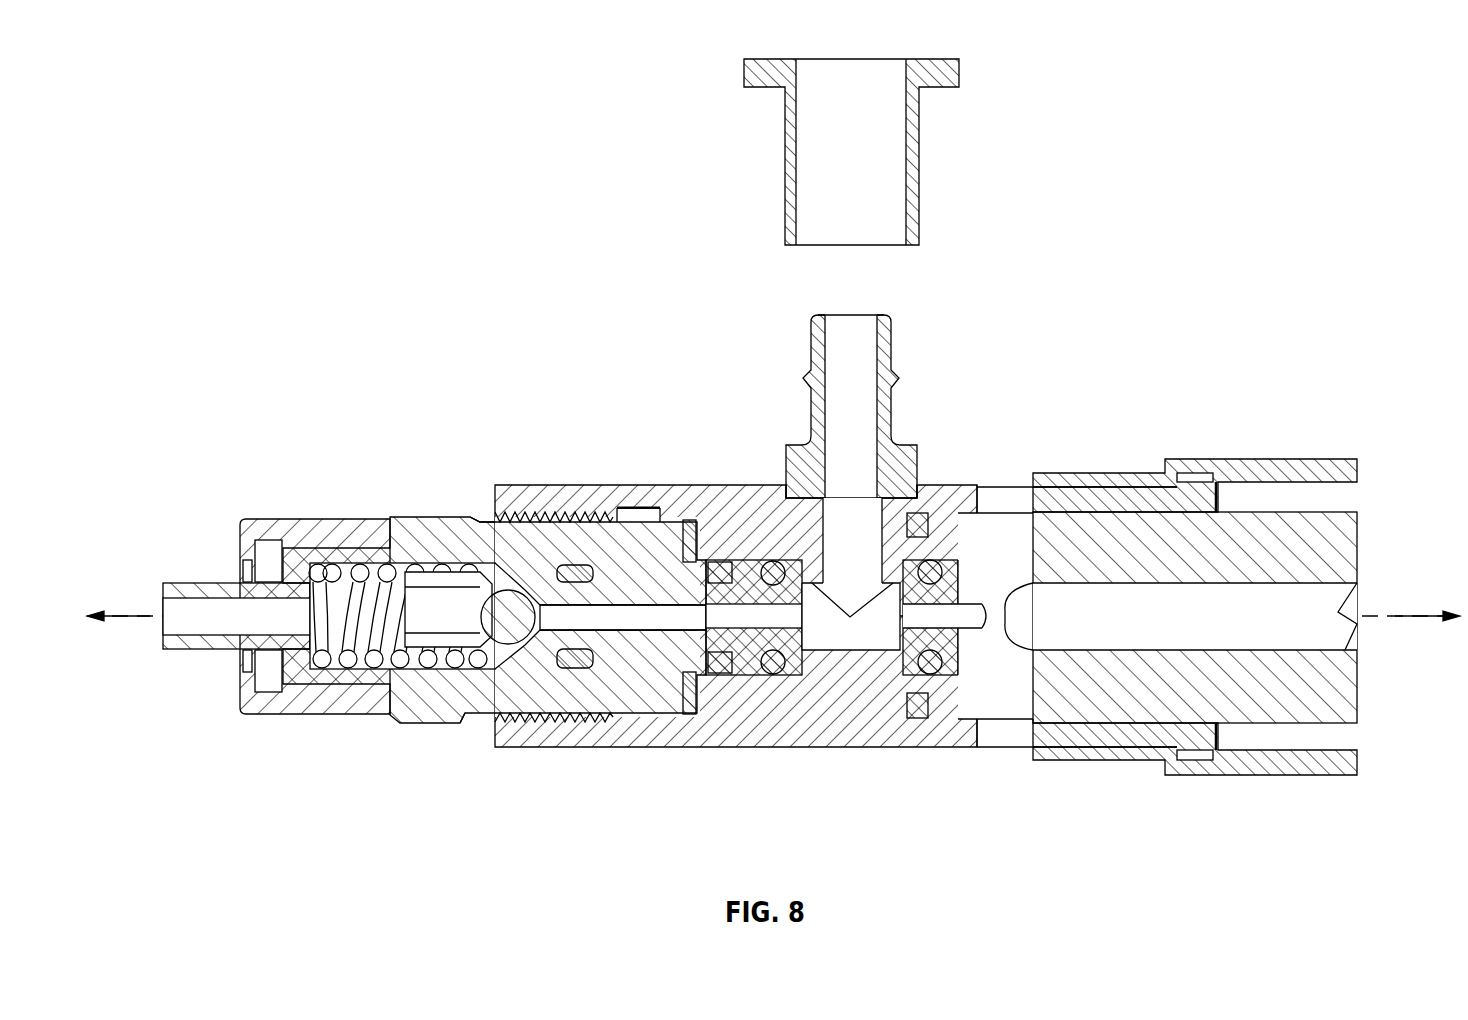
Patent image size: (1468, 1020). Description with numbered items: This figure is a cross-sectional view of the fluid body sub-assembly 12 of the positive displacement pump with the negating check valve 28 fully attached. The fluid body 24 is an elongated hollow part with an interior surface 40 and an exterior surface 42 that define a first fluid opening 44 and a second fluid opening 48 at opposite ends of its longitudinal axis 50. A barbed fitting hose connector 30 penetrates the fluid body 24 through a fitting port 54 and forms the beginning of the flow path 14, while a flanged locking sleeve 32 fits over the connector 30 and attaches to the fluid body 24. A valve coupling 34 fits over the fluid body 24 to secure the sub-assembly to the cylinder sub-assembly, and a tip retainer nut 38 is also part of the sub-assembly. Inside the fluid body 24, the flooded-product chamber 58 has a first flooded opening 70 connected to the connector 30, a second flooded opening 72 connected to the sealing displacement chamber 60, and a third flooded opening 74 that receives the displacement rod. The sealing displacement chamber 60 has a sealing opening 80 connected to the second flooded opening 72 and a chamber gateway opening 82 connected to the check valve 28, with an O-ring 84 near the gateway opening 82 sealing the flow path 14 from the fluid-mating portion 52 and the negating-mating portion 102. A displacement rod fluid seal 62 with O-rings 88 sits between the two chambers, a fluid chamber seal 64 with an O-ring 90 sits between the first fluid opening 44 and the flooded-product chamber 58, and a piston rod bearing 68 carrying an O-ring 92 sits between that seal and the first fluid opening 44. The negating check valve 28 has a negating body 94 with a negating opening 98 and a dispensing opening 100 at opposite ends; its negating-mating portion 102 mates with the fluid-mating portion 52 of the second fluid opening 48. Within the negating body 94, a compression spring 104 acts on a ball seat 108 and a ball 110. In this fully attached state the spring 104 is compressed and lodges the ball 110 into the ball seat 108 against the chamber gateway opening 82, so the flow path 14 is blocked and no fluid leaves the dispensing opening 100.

The fluid body sub-assembly 12 is at (618, 110).
The flow path 14 is at (852, 330).
The fluid body 24 is at (743, 338).
The negating check valve 28 is at (232, 440).
The barbed fitting hose connector 30 is at (893, 348).
The flanged locking sleeve 32 is at (930, 59).
The valve coupling 34 is at (1275, 459).
The tip retainer nut 38 is at (348, 518).
The interior surface 40 is at (560, 514).
The exterior surface 42 is at (668, 485).
The first fluid opening 44 is at (1220, 512).
The second fluid opening 48 is at (486, 520).
The longitudinal axis 50 is at (150, 613).
The fluid-mating portion 52 is at (555, 613).
The fitting port 54 is at (786, 490).
The flooded-product chamber 58 is at (845, 660).
The sealing displacement chamber 60 is at (640, 630).
The displacement rod fluid seal 62 is at (718, 675).
The fluid chamber seal 64 is at (962, 640).
The piston rod bearing 68 is at (1037, 740).
The first flooded opening 70 is at (830, 580).
The second flooded opening 72 is at (780, 700).
The third flooded opening 74 is at (895, 605).
The sealing opening 80 is at (712, 612).
The chamber gateway opening 82 is at (495, 612).
The O-ring 84 is at (578, 565).
The O-rings 88 is at (768, 560).
The O-ring 90 is at (945, 572).
The O-ring 92 is at (928, 515).
The negating body 94 is at (437, 517).
The negating opening 98 is at (690, 518).
The dispensing opening 100 is at (163, 625).
The negating-mating portion 102 is at (615, 518).
The compression spring 104 is at (333, 685).
The ball seat 108 is at (395, 688).
The ball 110 is at (488, 705).